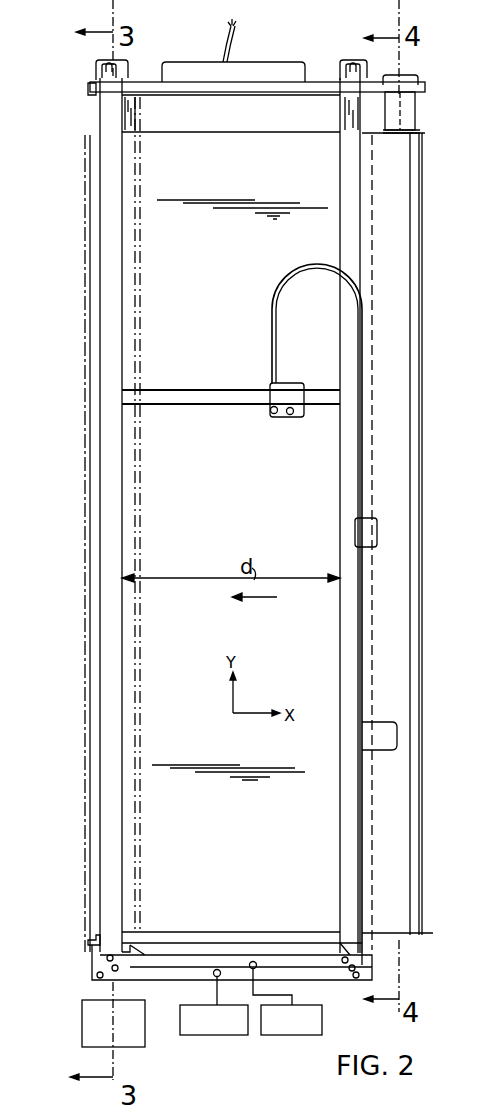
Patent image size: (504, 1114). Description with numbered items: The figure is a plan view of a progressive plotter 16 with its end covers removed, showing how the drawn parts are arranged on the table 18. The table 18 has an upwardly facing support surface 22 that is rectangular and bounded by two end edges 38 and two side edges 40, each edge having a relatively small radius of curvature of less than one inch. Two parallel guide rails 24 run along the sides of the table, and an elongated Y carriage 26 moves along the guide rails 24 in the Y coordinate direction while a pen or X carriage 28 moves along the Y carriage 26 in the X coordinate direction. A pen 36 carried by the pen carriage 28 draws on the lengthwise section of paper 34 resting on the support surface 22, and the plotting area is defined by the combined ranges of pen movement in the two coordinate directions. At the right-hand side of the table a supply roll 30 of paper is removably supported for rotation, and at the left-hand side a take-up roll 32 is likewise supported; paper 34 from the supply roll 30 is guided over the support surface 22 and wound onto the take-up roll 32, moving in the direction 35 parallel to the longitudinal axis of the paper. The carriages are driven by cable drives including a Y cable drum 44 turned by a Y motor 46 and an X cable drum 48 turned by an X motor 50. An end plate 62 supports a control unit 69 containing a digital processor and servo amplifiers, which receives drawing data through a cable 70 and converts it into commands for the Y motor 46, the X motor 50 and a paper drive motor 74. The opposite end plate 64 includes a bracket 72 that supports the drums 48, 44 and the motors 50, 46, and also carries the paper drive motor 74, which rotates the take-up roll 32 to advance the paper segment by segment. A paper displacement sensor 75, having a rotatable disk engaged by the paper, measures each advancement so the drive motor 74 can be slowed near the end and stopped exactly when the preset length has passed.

The progressive plotter 16 is at (440, 236).
The table 18 is at (418, 92).
The support surface 22 is at (318, 100).
The guide rails 24 is at (104, 424).
The Y carriage 26 is at (226, 406).
The pen or X carriage 28 is at (274, 418).
The supply roll 30 is at (422, 440).
The take-up roll 32 is at (88, 386).
The paper 34 is at (222, 136).
The direction 35 is at (262, 603).
The pen 36 is at (292, 416).
The end edges 38 is at (296, 136).
The side edges 40 is at (150, 176).
The Y cable drum 44 is at (254, 961).
The Y motor 46 is at (286, 1036).
The X cable drum 48 is at (218, 968).
The X motor 50 is at (228, 1036).
The end plate 62 is at (90, 88).
The end plate 64 is at (92, 940).
The control unit 69 is at (274, 72).
The cable 70 is at (231, 50).
The bracket 72 is at (178, 982).
The paper drive motor 74 is at (82, 1014).
The paper displacement sensor 75 is at (397, 736).